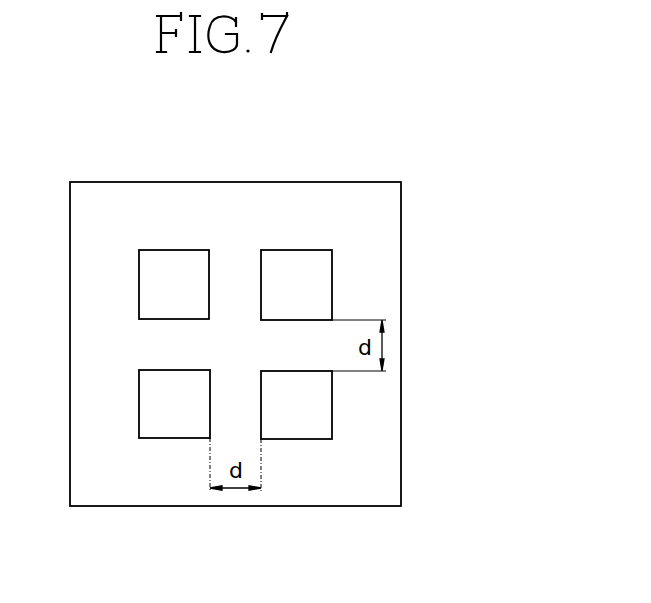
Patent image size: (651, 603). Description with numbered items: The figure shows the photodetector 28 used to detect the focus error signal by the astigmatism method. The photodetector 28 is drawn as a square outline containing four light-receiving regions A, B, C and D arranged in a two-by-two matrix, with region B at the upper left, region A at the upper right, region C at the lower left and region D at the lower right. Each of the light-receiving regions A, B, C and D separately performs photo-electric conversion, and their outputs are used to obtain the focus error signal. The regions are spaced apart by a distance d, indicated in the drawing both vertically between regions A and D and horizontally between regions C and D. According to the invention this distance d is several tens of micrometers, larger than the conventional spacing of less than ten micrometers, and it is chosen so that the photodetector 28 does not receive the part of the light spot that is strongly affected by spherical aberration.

The photodetector 28 is at (401, 249).
The light-receiving region A is at (296, 285).
The light-receiving region B is at (174, 284).
The light-receiving region C is at (174, 404).
The light-receiving region D is at (296, 405).